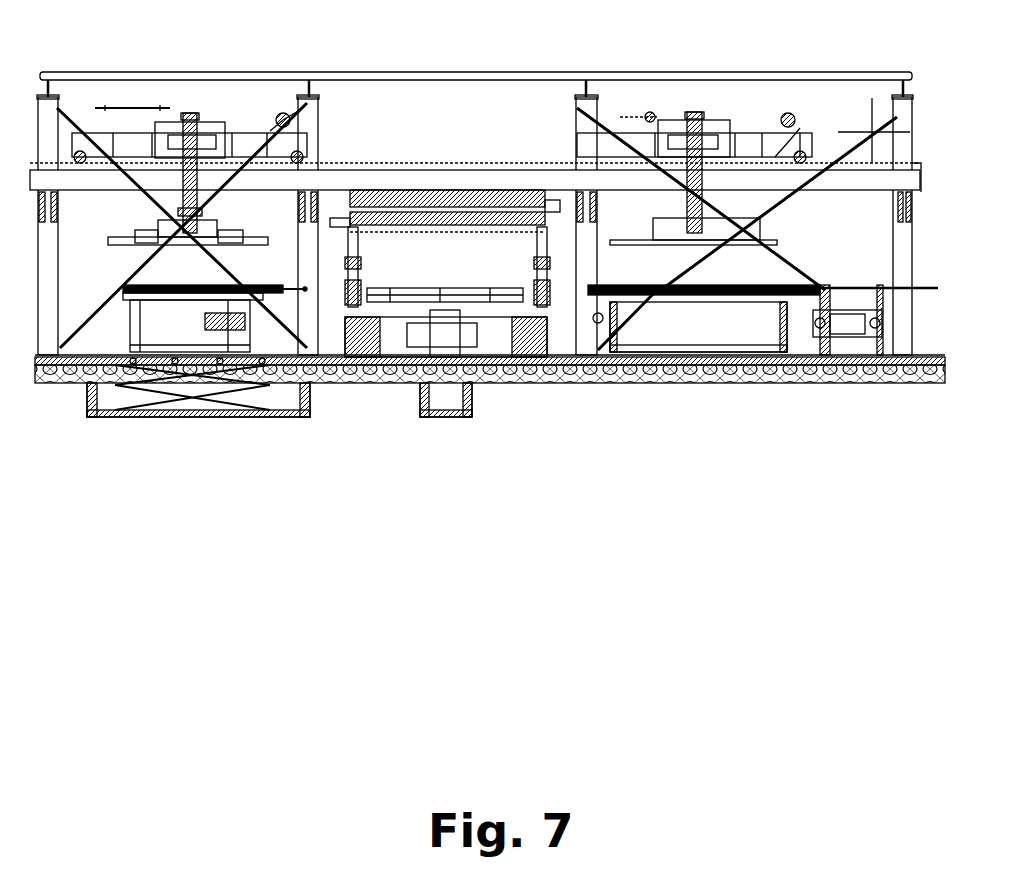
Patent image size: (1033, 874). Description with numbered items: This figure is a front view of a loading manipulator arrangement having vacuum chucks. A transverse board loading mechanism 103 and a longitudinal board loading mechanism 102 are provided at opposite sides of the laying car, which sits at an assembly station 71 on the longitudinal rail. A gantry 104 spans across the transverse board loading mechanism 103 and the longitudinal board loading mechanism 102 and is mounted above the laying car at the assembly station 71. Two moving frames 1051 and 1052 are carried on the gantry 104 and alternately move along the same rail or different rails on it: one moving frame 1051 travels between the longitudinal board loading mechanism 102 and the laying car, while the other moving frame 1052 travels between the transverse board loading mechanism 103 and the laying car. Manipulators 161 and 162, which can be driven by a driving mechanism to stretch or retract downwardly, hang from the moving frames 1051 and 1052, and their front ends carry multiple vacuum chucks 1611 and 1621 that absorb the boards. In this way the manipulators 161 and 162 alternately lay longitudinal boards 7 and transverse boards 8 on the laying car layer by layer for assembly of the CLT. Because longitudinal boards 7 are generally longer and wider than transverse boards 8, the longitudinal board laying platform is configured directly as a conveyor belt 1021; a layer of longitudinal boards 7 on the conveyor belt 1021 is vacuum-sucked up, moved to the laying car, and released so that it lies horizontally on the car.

The manipulator 162 is at (190, 120).
The moving frame 1052 is at (235, 143).
The vacuum chucks 1621 is at (240, 243).
The transverse boards 8 is at (245, 287).
The gantry 104 is at (368, 183).
The vacuum chucks 1611 is at (672, 135).
The manipulator 161 is at (708, 135).
The moving frame 1051 is at (763, 143).
The longitudinal boards 7 is at (765, 283).
The transverse board loading mechanism 103 is at (187, 288).
The assembly station 71 is at (497, 382).
The longitudinal board loading mechanism 102 is at (673, 297).
The conveyor belt 1021 is at (717, 297).